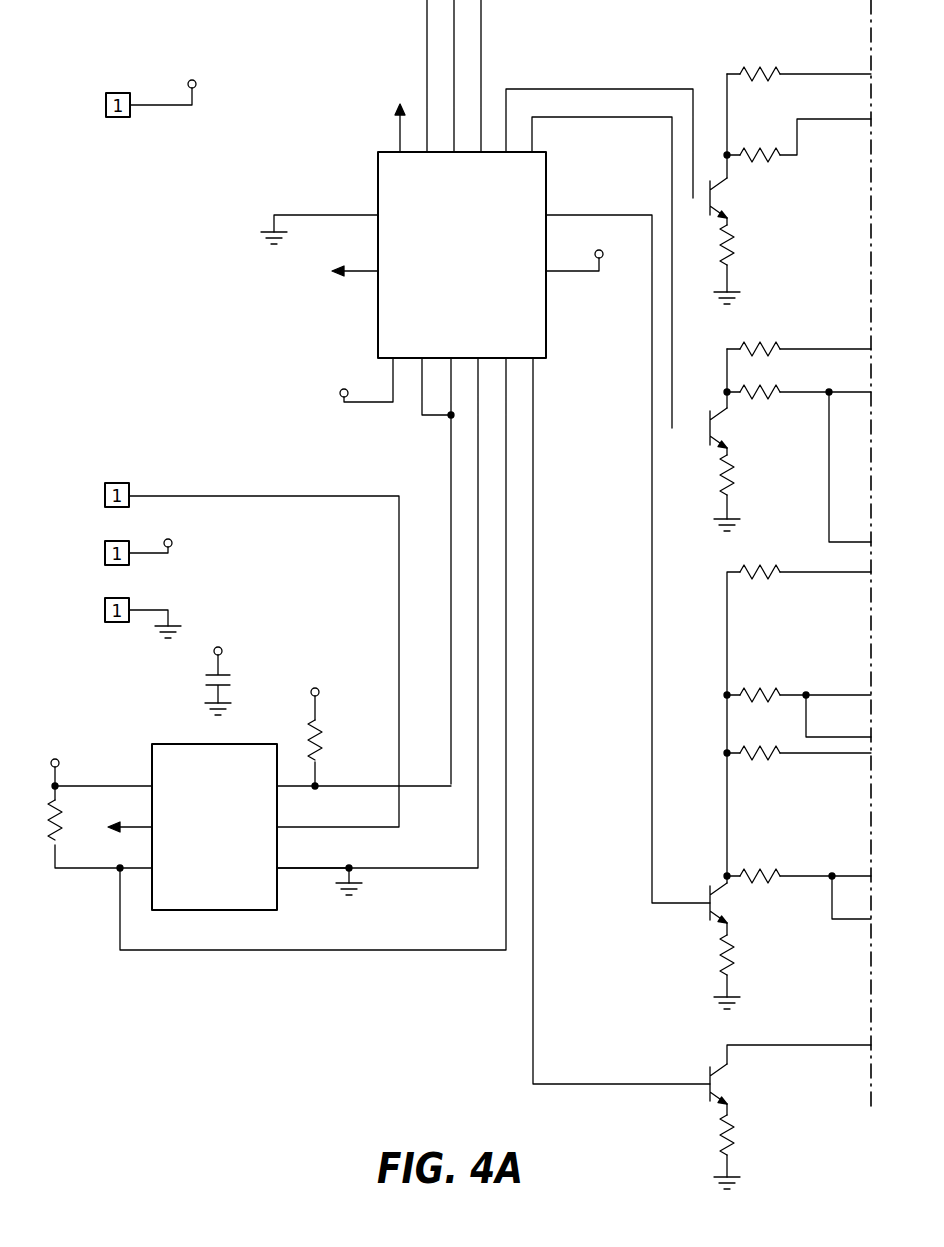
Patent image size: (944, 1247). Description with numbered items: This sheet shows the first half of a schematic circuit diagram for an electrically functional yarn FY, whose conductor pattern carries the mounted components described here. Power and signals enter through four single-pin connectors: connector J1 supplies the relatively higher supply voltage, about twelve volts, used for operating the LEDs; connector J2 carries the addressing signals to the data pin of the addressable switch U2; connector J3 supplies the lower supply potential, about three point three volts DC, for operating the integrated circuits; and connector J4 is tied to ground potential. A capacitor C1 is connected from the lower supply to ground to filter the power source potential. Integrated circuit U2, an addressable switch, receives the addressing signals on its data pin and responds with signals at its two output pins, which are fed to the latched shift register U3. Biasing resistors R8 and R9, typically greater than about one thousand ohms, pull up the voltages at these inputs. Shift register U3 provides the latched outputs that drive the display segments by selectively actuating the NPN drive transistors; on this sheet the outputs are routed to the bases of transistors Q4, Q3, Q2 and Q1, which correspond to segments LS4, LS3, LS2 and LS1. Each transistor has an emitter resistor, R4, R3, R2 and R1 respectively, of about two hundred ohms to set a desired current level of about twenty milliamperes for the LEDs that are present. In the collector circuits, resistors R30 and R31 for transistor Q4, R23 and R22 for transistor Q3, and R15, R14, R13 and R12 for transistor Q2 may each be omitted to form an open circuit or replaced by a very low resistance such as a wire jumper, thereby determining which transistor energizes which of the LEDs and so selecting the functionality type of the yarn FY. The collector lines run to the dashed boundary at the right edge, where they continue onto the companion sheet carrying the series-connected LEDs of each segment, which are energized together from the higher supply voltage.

The functional yarn FY is at (362, 100).
The latched shift register U3 is at (451, 236).
The addressable switch U2 is at (194, 819).
The connector J1 is at (128, 85).
The connector J2 is at (226, 645).
The connector J3 is at (128, 543).
The connector J4 is at (126, 608).
The capacitor C1 is at (231, 670).
The biasing resistor R8 is at (325, 727).
The biasing resistor R9 is at (98, 804).
The drive transistor Q4 is at (728, 149).
The drive transistor Q3 is at (728, 402).
The drive transistor Q2 is at (728, 904).
The drive transistor Q1 is at (790, 1080).
The collector resistor R30 is at (799, 64).
The collector resistor R31 is at (799, 140).
The collector resistor R23 is at (799, 339).
The collector resistor R22 is at (799, 454).
The collector resistor R15 is at (799, 711).
The collector resistor R14 is at (797, 703).
The collector resistor R13 is at (797, 743).
The collector resistor R12 is at (799, 884).
The emitter resistor R4 is at (737, 264).
The emitter resistor R3 is at (737, 493).
The emitter resistor R2 is at (737, 972).
The emitter resistor R1 is at (737, 1152).
The display segment LS4 is at (861, 200).
The display segment LS3 is at (826, 463).
The display segment LS2 is at (826, 938).
The display segment LS1 is at (826, 1113).